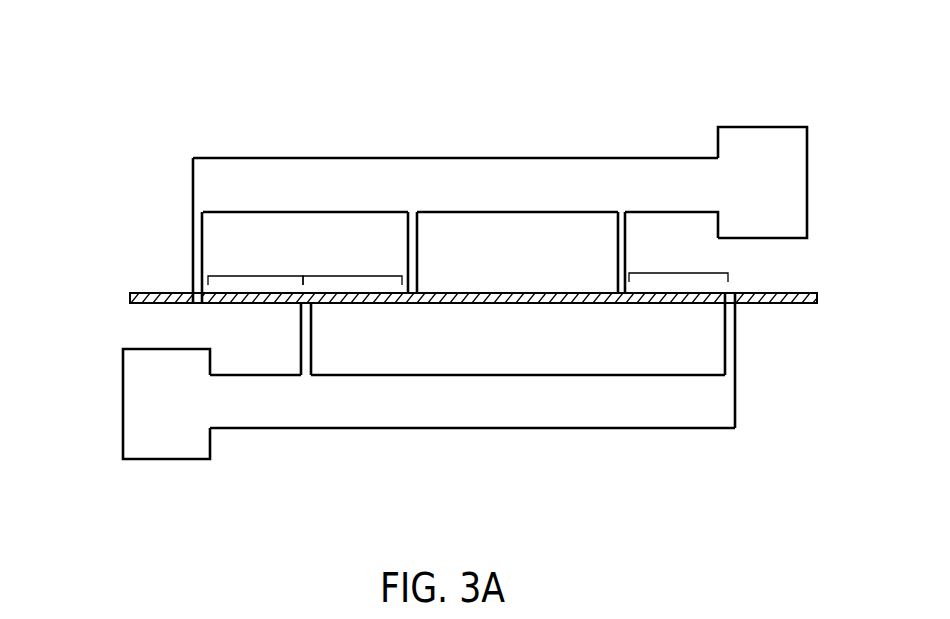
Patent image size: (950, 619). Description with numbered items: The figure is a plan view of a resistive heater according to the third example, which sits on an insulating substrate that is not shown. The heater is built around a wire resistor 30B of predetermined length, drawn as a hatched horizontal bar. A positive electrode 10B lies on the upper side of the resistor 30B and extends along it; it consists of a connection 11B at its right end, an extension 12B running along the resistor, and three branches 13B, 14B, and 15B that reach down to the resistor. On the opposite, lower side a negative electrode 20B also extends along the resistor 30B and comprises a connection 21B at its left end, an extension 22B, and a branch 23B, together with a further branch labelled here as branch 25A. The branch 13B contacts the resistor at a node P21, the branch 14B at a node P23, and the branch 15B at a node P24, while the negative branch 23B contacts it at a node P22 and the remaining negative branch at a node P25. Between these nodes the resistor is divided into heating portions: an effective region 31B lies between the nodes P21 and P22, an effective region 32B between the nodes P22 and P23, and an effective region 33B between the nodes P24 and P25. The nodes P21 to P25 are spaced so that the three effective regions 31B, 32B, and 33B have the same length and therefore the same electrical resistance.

The positive electrode 10B is at (475, 157).
The connection 11B is at (763, 126).
The extension 12B is at (451, 158).
The branch 13B is at (197, 237).
The branch 14B is at (417, 241).
The branch 15B is at (618, 242).
The negative electrode 20B is at (496, 412).
The connection 21B is at (170, 459).
The extension 22B is at (452, 429).
The branch 23B is at (301, 337).
The branch 25A is at (733, 343).
The wire resistor 30B is at (419, 264).
The effective region 31B is at (255, 265).
The effective region 32B is at (352, 265).
The effective region 33B is at (678, 262).
The node P21 is at (193, 304).
The node P22 is at (312, 303).
The node P23 is at (420, 303).
The node P24 is at (627, 303).
The node P25 is at (737, 303).